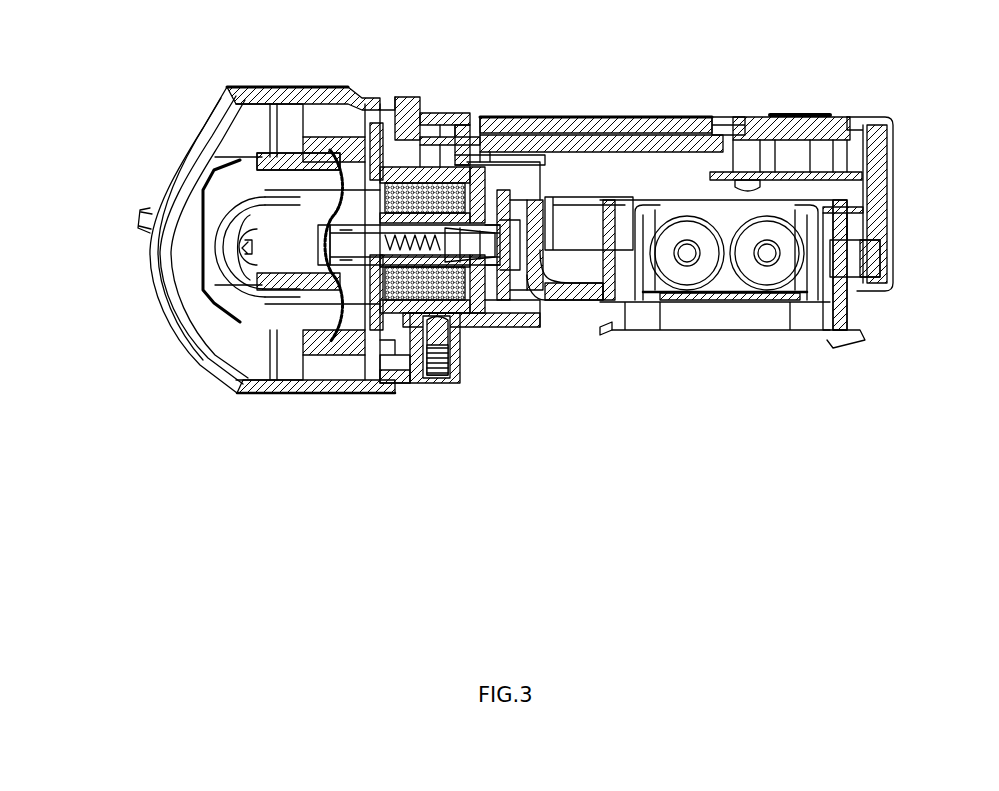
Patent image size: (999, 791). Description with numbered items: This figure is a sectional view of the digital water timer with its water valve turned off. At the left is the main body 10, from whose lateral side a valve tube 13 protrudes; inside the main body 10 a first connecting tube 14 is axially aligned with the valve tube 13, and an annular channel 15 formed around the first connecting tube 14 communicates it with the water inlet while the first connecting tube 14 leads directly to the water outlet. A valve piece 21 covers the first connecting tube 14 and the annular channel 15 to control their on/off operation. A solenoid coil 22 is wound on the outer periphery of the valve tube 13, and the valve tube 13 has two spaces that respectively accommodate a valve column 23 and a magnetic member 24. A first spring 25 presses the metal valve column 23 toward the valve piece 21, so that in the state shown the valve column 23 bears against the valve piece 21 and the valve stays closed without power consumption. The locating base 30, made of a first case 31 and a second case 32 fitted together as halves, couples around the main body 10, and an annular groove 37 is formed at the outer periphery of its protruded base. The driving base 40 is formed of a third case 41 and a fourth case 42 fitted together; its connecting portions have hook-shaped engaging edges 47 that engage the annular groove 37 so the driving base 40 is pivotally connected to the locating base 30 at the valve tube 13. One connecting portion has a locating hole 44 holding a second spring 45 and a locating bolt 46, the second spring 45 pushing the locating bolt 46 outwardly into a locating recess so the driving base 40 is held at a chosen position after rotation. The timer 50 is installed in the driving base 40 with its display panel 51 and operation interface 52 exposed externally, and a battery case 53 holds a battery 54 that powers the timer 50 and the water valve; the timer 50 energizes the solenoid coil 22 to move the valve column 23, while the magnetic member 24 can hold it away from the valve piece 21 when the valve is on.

The main body 10 is at (222, 188).
The valve tube 13 is at (545, 200).
The first connecting tube 14 is at (240, 296).
The annular channel 15 is at (325, 200).
The valve piece 21 is at (305, 158).
The solenoid coil 22 is at (497, 118).
The valve column 23 is at (312, 235).
The magnetic member 24 is at (533, 292).
The first spring 25 is at (452, 315).
The locating base 30 is at (210, 371).
The first case 31 is at (286, 394).
The second case 32 is at (208, 130).
The annular groove 37 is at (432, 213).
The driving base 40 is at (896, 203).
The third case 41 is at (590, 285).
The fourth case 42 is at (843, 117).
The locating hole 44 is at (458, 357).
The second spring 45 is at (435, 380).
The locating bolt 46 is at (410, 381).
The engaging edge 47 is at (390, 106).
The timer 50 is at (563, 118).
The display panel 51 is at (640, 117).
The operation interface 52 is at (787, 117).
The battery case 53 is at (870, 286).
The battery 54 is at (686, 293).